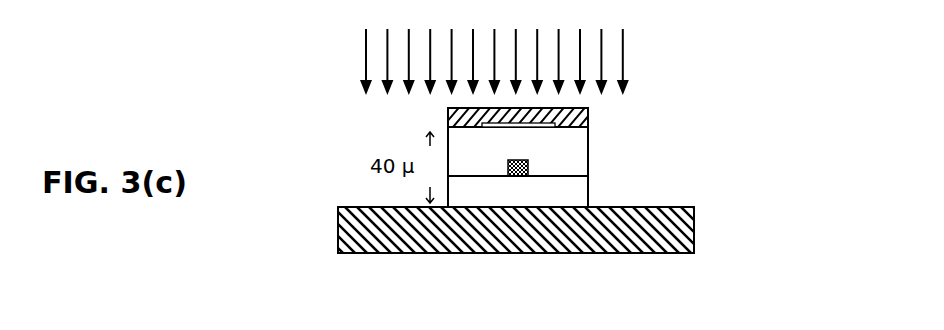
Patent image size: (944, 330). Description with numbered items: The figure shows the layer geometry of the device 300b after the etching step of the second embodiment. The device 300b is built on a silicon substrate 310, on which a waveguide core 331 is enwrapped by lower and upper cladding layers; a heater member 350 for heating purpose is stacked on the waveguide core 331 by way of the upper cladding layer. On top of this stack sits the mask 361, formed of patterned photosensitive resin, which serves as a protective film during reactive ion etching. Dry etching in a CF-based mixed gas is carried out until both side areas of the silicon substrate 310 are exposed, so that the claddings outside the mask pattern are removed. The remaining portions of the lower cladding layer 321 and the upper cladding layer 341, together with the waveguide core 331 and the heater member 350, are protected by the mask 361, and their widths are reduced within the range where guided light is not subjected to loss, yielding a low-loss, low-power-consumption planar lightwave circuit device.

The device 300b is at (329, 187).
The silicon substrate 310 is at (695, 232).
The remaining portion of the lower cladding layer 321 is at (575, 198).
The waveguide core 331 is at (528, 161).
The remaining portion of the upper cladding layer 341 is at (557, 147).
The heater member 350 is at (487, 130).
The mask 361 is at (448, 108).